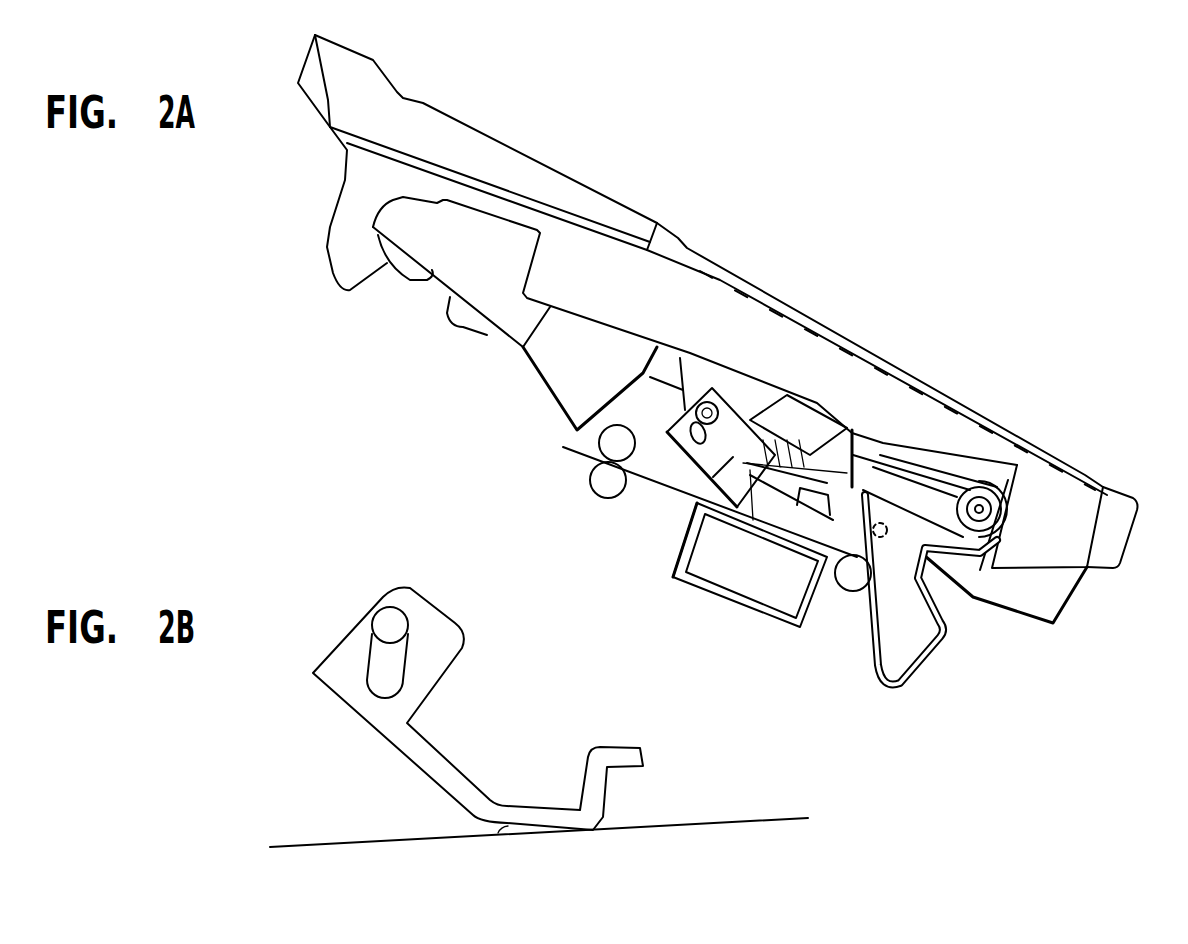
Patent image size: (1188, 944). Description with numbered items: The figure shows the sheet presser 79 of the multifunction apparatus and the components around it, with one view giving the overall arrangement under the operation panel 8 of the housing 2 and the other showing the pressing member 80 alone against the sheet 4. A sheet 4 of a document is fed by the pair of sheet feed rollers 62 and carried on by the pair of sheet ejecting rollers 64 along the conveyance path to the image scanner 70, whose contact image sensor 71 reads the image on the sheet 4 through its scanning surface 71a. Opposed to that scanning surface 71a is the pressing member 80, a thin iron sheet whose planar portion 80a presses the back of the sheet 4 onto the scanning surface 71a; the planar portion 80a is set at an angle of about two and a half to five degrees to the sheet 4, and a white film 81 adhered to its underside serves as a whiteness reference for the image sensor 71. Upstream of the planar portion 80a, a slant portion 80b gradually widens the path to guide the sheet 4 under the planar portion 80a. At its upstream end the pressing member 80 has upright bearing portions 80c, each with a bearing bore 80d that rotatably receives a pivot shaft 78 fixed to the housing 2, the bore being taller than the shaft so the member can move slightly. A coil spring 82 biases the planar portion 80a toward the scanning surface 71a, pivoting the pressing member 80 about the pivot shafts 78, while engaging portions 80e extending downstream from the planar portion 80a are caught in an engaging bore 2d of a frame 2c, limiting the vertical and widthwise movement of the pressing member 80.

In FIG. 2A, the housing 2 is at (770, 333).
In FIG. 2A, the frame 2c is at (820, 597).
In FIG. 2A, the engaging bore 2d is at (828, 600).
In FIG. 2A, the sheet 4 is at (580, 447).
In FIG. 2B, the sheet 4 is at (760, 832).
In FIG. 2A, the operation panel 8 is at (930, 377).
In FIG. 2A, the sheet feed rollers 62 is at (605, 445).
In FIG. 2A, the sheet ejecting rollers 64 is at (855, 592).
In FIG. 2A, the image scanner 70 is at (723, 610).
In FIG. 2A, the contact image sensor 71 is at (767, 587).
In FIG. 2A, the scanning surface 71a is at (728, 512).
In FIG. 2A, the pivot shaft 78 is at (697, 412).
In FIG. 2B, the pivot shaft 78 is at (375, 622).
In FIG. 2A, the sheet presser 79 is at (683, 473).
In FIG. 2A, the pressing member 80 is at (737, 407).
In FIG. 2B, the pressing member 80 is at (370, 723).
In FIG. 2A, the planar portion 80a is at (773, 523).
In FIG. 2B, the planar portion 80a is at (543, 812).
In FIG. 2A, the slant portion 80b is at (693, 487).
In FIG. 2B, the slant portion 80b is at (452, 777).
In FIG. 2A, the bearing portion 80c is at (767, 413).
In FIG. 2B, the bearing portion 80c is at (433, 618).
In FIG. 2A, the bearing bore 80d is at (730, 417).
In FIG. 2B, the bearing bore 80d is at (393, 672).
In FIG. 2A, the engaging portion 80e is at (852, 433).
In FIG. 2B, the engaging portion 80e is at (620, 742).
In FIG. 2A, the white film 81 is at (753, 518).
In FIG. 2A, the coil spring 82 is at (847, 360).